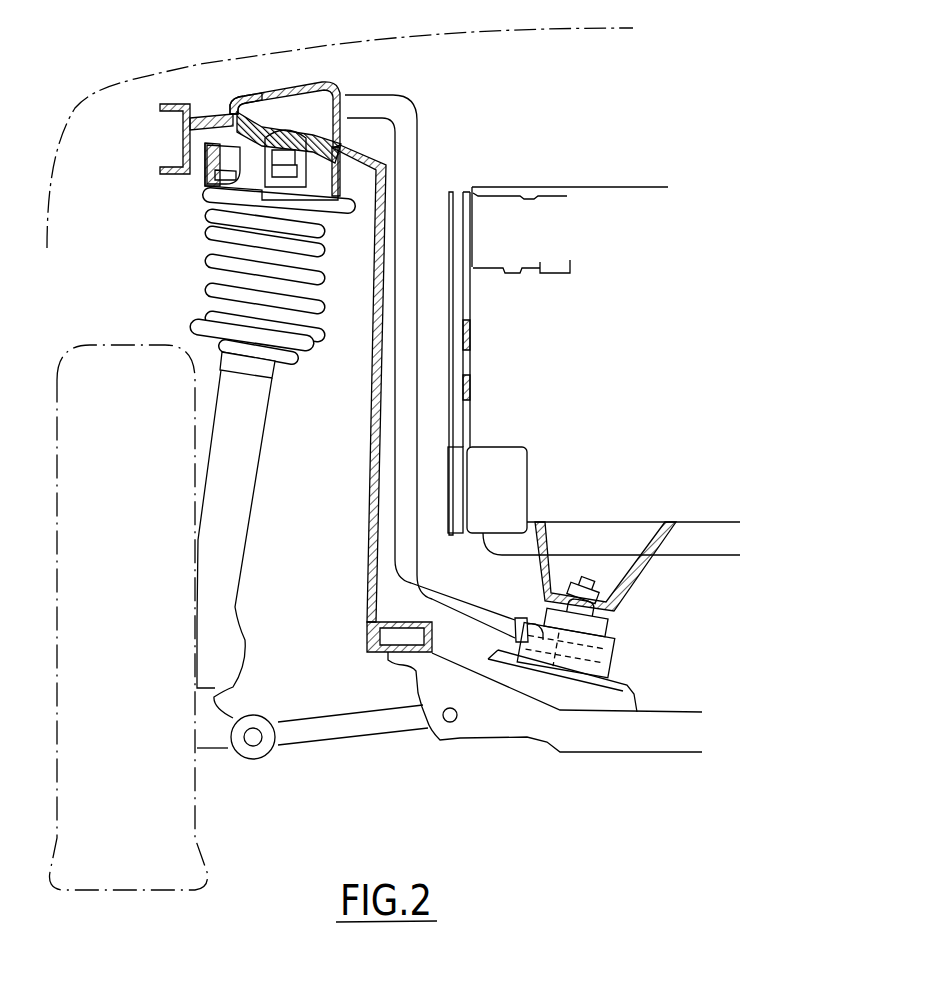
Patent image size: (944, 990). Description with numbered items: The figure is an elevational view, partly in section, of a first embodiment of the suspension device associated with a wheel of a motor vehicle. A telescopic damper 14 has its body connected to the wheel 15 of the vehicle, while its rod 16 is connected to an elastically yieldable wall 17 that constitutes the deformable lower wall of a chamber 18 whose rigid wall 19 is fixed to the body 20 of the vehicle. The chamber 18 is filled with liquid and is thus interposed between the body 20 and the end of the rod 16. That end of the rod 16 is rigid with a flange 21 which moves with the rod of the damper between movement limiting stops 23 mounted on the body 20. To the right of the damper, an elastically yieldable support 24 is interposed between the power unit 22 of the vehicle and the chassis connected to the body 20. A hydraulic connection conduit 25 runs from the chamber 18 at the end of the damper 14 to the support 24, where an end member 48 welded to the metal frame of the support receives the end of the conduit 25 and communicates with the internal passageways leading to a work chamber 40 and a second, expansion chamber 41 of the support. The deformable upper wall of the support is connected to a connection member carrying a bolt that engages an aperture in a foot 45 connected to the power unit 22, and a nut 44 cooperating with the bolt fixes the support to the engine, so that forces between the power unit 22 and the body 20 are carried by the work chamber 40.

The telescopic damper 14 is at (262, 481).
The wheel 15 is at (99, 864).
The rod 16 is at (280, 185).
The elastically yieldable wall 17 is at (255, 123).
The chamber 18 is at (317, 95).
The rigid wall 19 is at (246, 97).
The body 20 is at (376, 331).
The flange 21 is at (224, 218).
The power unit 22 is at (630, 198).
The movement limiting stops 23 is at (207, 147).
The elastically yieldable support 24 is at (592, 641).
The hydraulic connection conduit 25 is at (408, 160).
The chamber 40 is at (610, 624).
The second chamber 41 is at (590, 662).
The nut 44 is at (600, 598).
The foot 45 is at (648, 522).
The end member 48 is at (520, 618).